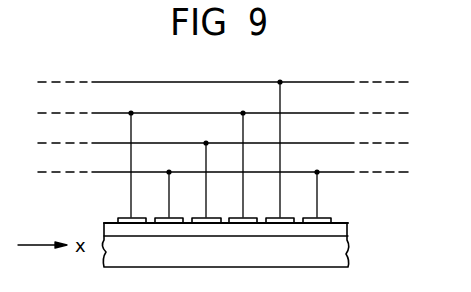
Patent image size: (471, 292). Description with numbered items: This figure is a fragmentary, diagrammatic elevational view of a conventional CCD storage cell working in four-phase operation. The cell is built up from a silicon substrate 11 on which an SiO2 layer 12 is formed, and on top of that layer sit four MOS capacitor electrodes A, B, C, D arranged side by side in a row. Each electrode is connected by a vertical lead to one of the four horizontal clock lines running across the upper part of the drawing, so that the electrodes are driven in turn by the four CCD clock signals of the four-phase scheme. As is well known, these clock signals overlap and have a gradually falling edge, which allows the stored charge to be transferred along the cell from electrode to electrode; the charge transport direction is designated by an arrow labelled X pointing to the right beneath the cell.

The SiO2 layer 12 is at (348, 230).
The silicon substrate 11 is at (340, 252).
The MOS capacitor electrode A is at (169, 195).
The MOS capacitor electrode B is at (207, 181).
The MOS capacitor electrode C is at (244, 166).
The MOS capacitor electrode D is at (282, 150).